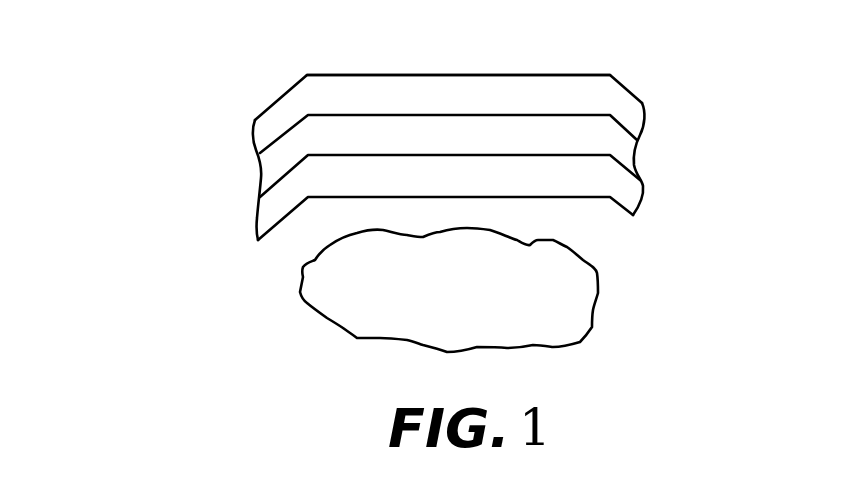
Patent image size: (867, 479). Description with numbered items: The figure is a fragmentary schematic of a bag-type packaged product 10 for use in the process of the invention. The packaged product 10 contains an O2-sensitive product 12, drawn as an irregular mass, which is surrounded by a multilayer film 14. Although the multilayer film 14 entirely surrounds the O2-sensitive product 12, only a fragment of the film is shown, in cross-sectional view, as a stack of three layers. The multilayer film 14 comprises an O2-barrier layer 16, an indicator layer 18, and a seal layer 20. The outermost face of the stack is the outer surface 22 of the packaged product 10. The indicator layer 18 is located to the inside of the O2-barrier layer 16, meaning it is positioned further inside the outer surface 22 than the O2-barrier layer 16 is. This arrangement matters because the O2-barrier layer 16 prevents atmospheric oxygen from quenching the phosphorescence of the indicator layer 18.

The packaged product 10 is at (110, 157).
The O2-sensitive product 12 is at (598, 300).
The multilayer film 14 is at (675, 68).
The O2-barrier layer 16 is at (253, 139).
The indicator layer 18 is at (261, 176).
The seal layer 20 is at (253, 220).
The outer surface 22 is at (425, 75).